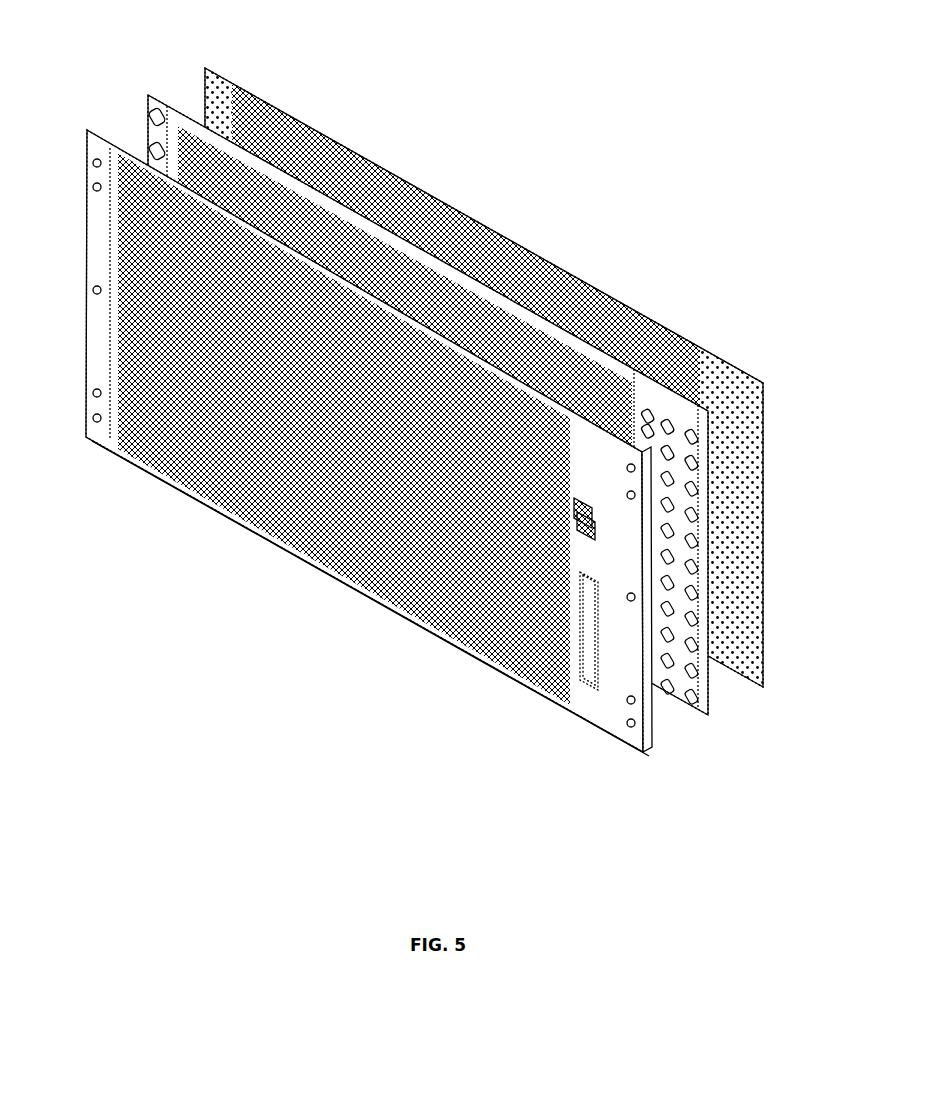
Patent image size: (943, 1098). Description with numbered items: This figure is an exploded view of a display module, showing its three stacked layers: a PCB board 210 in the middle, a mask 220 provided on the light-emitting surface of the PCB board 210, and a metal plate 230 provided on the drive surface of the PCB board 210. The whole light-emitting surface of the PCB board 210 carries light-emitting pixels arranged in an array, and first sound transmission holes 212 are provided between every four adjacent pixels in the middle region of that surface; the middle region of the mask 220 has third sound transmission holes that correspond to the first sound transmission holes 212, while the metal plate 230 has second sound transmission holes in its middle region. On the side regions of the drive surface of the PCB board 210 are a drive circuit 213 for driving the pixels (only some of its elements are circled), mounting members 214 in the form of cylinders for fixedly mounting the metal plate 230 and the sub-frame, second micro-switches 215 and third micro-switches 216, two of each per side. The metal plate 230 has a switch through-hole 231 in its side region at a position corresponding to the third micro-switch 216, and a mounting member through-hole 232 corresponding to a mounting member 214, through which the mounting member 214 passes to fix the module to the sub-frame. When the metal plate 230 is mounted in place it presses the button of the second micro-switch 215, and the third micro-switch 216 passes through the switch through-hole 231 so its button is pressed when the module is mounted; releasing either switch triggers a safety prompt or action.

The PCB board 210 is at (465, 381).
The first sound transmission holes 212 is at (182, 124).
The drive circuit 213 is at (726, 555).
The mounting members 214 is at (692, 440).
The second micro-switch 215 is at (688, 428).
The third micro-switch 216 is at (700, 465).
The mask 220 is at (207, 67).
The metal plate 230 is at (393, 449).
The switch through-hole 231 is at (656, 716).
The mounting member through-hole 232 is at (631, 730).